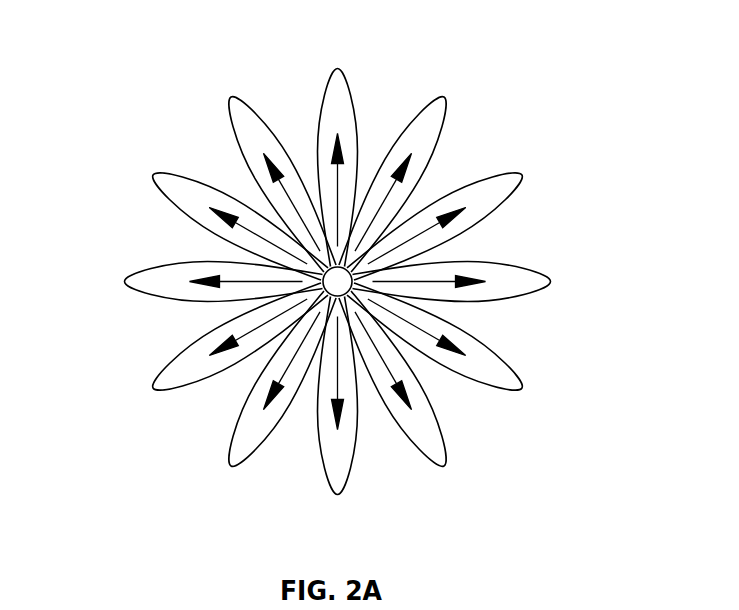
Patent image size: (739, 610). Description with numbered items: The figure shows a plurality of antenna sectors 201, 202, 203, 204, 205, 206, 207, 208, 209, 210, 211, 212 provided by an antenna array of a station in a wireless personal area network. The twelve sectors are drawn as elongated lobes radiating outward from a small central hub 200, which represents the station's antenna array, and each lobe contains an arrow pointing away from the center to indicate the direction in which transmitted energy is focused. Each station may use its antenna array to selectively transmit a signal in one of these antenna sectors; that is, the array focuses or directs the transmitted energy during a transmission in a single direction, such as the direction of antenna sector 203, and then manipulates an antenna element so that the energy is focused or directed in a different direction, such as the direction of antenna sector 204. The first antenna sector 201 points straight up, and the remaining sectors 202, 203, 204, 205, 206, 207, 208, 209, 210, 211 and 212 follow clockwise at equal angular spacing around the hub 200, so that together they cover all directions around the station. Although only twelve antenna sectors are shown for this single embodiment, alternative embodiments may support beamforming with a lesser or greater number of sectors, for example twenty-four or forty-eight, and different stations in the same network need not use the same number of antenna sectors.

The central hub 200 is at (337, 281).
The antenna sector 201 is at (340, 66).
The antenna sector 202 is at (445, 96).
The antenna sector 203 is at (521, 177).
The antenna sector 204 is at (544, 269).
The antenna sector 205 is at (522, 387).
The antenna sector 206 is at (443, 468).
The antenna sector 207 is at (339, 497).
The antenna sector 208 is at (232, 467).
The antenna sector 209 is at (154, 387).
The antenna sector 210 is at (125, 278).
The antenna sector 211 is at (154, 177).
The antenna sector 212 is at (230, 91).